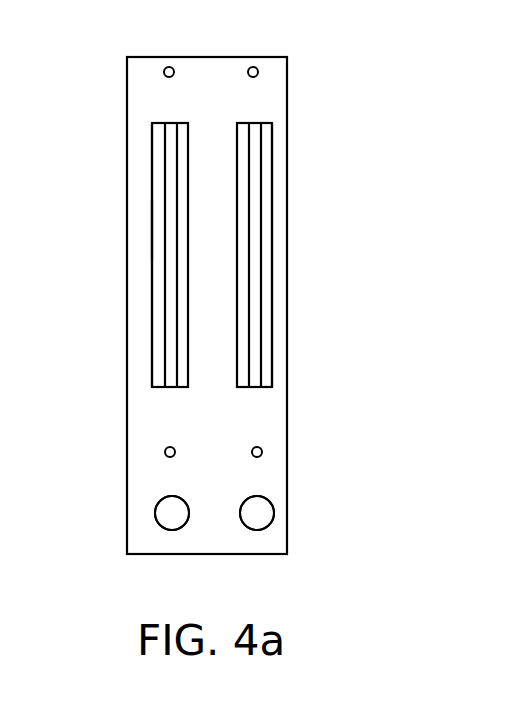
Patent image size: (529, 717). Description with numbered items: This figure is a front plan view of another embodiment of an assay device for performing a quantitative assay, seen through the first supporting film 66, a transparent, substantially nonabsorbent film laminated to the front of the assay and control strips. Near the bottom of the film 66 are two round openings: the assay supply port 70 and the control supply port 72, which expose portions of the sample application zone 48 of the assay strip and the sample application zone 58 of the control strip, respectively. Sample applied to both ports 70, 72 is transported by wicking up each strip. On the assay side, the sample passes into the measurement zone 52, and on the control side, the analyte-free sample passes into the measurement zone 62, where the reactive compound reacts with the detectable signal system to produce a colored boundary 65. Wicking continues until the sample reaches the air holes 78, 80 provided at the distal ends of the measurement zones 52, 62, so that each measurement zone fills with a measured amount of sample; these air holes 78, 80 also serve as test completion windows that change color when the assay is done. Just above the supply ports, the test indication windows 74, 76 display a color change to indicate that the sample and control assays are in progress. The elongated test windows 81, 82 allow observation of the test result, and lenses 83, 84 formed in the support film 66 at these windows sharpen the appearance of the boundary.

The first supporting film 66 is at (208, 72).
The measurement zone 62 is at (168, 262).
The lens 84 is at (155, 150).
The colored boundary 65 is at (173, 197).
The test window 82 is at (152, 237).
The measurement zone 52 is at (257, 282).
The lens 83 is at (265, 150).
The test window 81 is at (272, 205).
The air hole 80 is at (167, 67).
The air hole 78 is at (254, 67).
The test indication window 76 is at (165, 457).
The test indication window 74 is at (263, 452).
The control supply port 72 is at (158, 515).
The assay supply port 70 is at (267, 510).
The sample application zone 58 is at (175, 522).
The sample application zone 48 is at (258, 525).